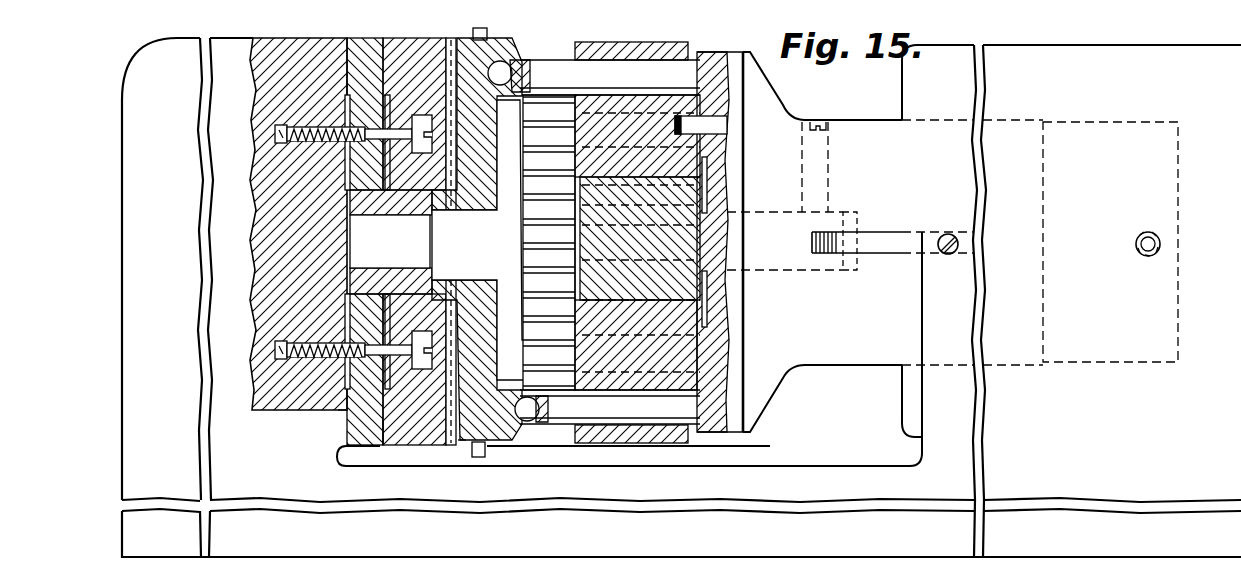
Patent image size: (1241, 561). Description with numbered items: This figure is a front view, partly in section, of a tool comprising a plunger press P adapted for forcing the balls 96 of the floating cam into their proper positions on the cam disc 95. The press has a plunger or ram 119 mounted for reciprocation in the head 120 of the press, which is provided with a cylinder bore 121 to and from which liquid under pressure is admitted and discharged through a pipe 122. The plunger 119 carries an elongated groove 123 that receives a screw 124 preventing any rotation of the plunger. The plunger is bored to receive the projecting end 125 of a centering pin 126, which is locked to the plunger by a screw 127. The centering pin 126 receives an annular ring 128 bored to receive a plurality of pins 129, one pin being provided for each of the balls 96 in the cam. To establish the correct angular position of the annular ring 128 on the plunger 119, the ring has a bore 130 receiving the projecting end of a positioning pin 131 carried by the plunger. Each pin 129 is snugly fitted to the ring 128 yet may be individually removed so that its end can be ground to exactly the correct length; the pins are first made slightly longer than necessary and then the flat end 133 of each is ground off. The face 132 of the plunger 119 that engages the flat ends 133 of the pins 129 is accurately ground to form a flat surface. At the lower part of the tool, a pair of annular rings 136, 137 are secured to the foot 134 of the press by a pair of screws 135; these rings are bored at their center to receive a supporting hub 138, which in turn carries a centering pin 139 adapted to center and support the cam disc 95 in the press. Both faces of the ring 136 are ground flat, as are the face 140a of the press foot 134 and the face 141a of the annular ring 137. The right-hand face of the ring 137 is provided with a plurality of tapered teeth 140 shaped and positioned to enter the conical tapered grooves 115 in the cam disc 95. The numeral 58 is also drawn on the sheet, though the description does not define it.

The plunger press P is at (848, 100).
The stop member 58 is at (478, 458).
The cam disc 95 is at (490, 46).
The balls 96 is at (513, 73).
The conical tapered grooves 115 is at (462, 447).
The plunger 119 is at (880, 128).
The head 120 is at (1210, 52).
The cylinder bore 121 is at (1105, 128).
The pipe 122 is at (1136, 244).
The elongated groove 123 is at (884, 256).
The screw 124 is at (948, 257).
The projecting end 125 is at (836, 214).
The centering pin 126 is at (700, 200).
The screw 127 is at (828, 164).
The annular ring 128 is at (652, 46).
The pins 129 is at (566, 94).
The bore 130 is at (684, 113).
The positioning pin 131 is at (721, 126).
The face 132 is at (707, 60).
The flat ends 133 is at (697, 432).
The foot 134 is at (300, 46).
The screws 135 is at (272, 134).
The annular ring 136 is at (366, 46).
The annular ring 137 is at (405, 47).
The supporting hub 138 is at (378, 214).
The centering pin 139 is at (493, 264).
The tapered teeth 140 is at (455, 47).
The face 140a is at (345, 405).
The face 141a is at (386, 426).